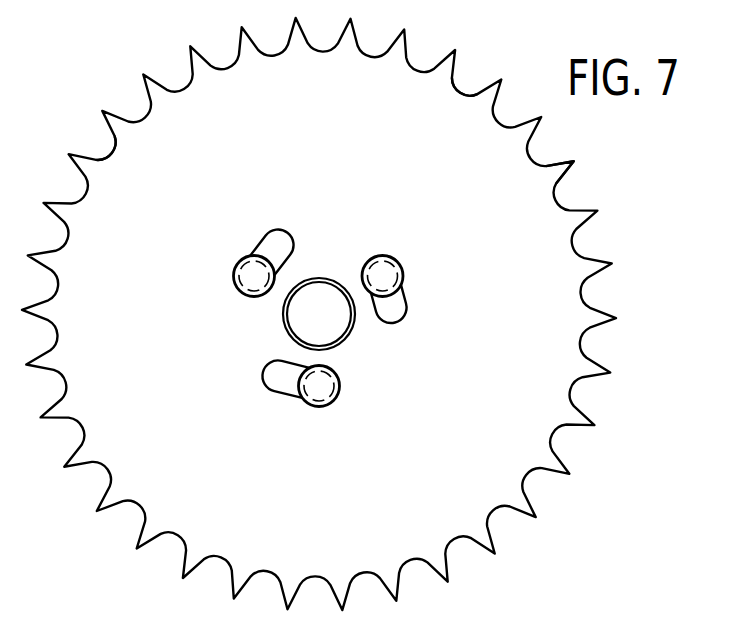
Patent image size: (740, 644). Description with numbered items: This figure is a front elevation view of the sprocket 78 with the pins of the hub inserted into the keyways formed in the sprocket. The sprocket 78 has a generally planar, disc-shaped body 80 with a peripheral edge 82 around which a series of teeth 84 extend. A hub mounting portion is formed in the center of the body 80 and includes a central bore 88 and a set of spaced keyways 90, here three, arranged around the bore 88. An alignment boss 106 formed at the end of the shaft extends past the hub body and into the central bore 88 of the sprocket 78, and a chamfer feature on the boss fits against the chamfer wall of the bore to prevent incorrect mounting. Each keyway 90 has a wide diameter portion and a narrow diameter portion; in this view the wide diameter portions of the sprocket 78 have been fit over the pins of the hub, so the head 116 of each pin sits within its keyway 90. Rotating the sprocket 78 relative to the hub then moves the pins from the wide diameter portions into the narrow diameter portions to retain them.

The sprocket 78 is at (96, 67).
The body 80 is at (452, 98).
The peripheral edge 82 is at (110, 153).
The teeth 84 is at (566, 170).
The central bore 88 is at (284, 321).
The keyways 90 is at (253, 216).
The alignment boss 106 is at (318, 295).
The head 116 is at (238, 294).